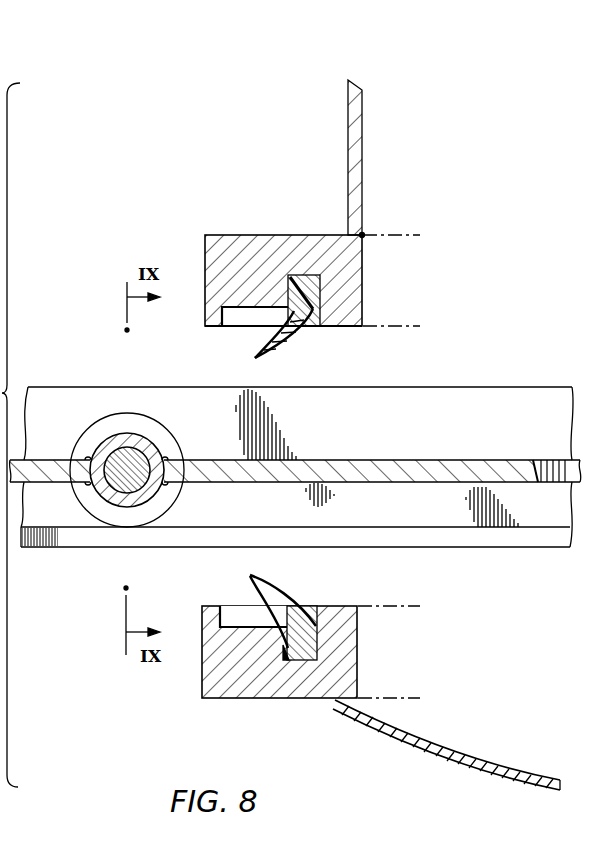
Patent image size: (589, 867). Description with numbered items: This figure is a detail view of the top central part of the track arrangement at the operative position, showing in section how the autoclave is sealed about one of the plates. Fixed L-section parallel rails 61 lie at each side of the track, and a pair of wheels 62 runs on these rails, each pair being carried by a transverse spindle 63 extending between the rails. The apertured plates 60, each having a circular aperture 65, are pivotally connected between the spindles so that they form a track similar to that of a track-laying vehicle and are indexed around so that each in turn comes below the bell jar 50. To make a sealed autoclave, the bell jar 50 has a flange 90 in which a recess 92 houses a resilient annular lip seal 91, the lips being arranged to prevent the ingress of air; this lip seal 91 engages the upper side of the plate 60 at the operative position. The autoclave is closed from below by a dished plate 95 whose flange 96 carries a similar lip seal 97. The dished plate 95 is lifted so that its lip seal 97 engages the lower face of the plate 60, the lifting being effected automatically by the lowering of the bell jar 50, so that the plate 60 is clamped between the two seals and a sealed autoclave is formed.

The bell jar 50 is at (350, 125).
The apertured plate 60 is at (50, 460).
The rail 61 is at (72, 540).
The wheel 62 is at (110, 425).
The transverse spindle 63 is at (138, 460).
The circular aperture 65 is at (538, 483).
The flange 90 is at (256, 238).
The lip seal 91 is at (306, 328).
The recess 92 is at (235, 315).
The dished plate 95 is at (437, 752).
The flange 96 is at (202, 686).
The lip seal 97 is at (295, 612).